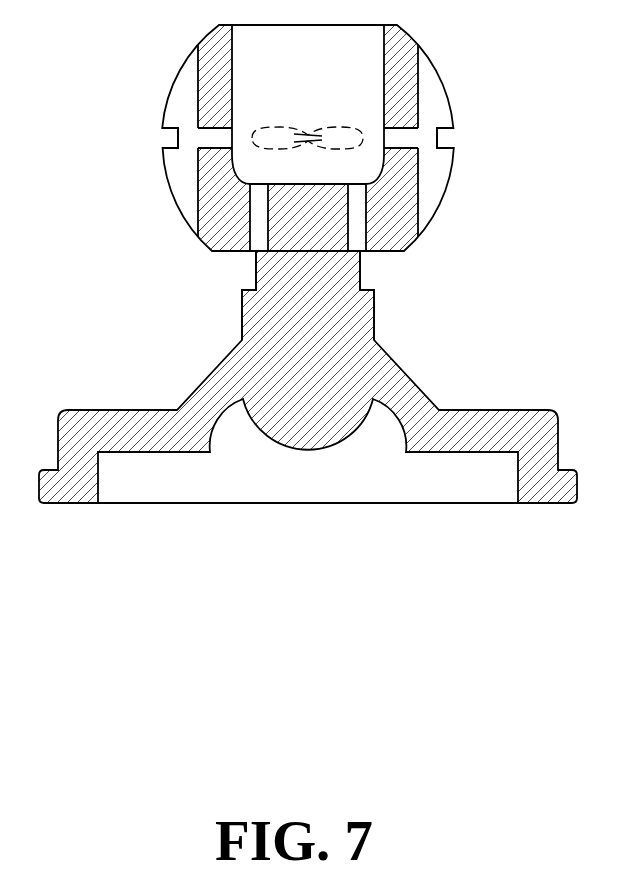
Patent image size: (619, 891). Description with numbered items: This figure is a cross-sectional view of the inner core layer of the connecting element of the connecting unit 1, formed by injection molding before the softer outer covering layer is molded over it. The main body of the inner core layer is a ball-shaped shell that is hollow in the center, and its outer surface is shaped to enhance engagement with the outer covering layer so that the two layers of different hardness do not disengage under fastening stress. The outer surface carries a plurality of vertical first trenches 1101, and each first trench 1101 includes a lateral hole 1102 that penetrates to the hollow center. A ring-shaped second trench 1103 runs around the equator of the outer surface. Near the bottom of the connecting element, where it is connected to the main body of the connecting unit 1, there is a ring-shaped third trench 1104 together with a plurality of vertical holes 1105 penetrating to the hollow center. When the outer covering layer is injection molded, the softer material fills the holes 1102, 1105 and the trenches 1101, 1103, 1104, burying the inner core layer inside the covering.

The connecting unit 1 is at (75, 488).
The first trench 1101 is at (187, 176).
The lateral hole 1102 is at (217, 137).
The second trench 1103 is at (168, 138).
The third trench 1104 is at (245, 272).
The vertical hole 1105 is at (260, 223).